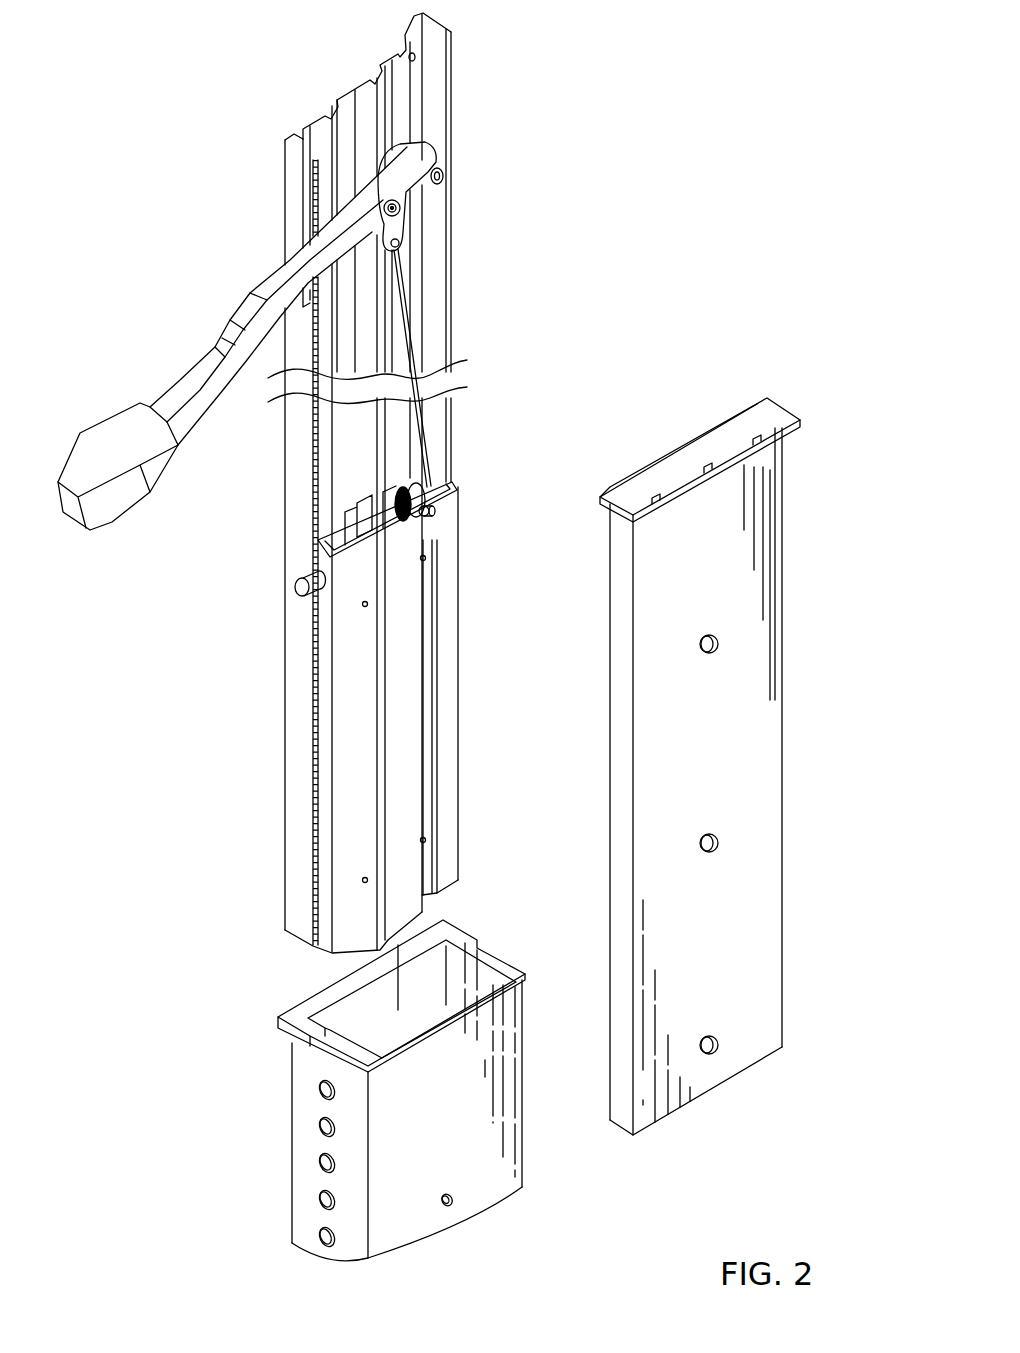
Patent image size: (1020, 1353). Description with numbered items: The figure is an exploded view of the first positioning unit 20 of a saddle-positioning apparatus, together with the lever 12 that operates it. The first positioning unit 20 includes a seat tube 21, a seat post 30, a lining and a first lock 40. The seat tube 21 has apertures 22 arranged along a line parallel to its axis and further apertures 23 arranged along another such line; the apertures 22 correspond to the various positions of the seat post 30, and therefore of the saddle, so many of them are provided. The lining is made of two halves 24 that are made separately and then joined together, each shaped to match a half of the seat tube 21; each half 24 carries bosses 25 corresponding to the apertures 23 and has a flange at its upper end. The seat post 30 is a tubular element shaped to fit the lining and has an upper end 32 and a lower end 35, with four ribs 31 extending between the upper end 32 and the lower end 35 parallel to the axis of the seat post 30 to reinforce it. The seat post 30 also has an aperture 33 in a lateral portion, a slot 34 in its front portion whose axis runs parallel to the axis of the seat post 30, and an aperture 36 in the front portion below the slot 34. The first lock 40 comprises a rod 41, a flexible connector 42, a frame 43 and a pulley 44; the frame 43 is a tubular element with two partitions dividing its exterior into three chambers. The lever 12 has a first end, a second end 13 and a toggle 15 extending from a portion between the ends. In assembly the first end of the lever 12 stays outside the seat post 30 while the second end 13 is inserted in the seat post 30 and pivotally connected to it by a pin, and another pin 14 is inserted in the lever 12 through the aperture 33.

The lever 12 is at (183, 395).
The second end 13 is at (408, 150).
The pin 14 is at (400, 210).
The toggle 15 is at (398, 238).
The first positioning unit 20 is at (172, 900).
The seat tube 21 is at (303, 1125).
The apertures 22 is at (320, 1197).
The apertures 23 is at (447, 1200).
The halves 24 is at (753, 827).
The bosses 25 is at (713, 1052).
The seat post 30 is at (303, 832).
The ribs 31 is at (330, 107).
The upper end 32 is at (293, 137).
The aperture 33 is at (373, 160).
The slot 34 is at (303, 187).
The lower end 35 is at (302, 940).
The aperture 36 is at (307, 578).
The first lock 40 is at (438, 470).
The rod 41 is at (300, 593).
The flexible connector 42 is at (400, 287).
The frame 43 is at (445, 608).
The pulley 44 is at (430, 507).